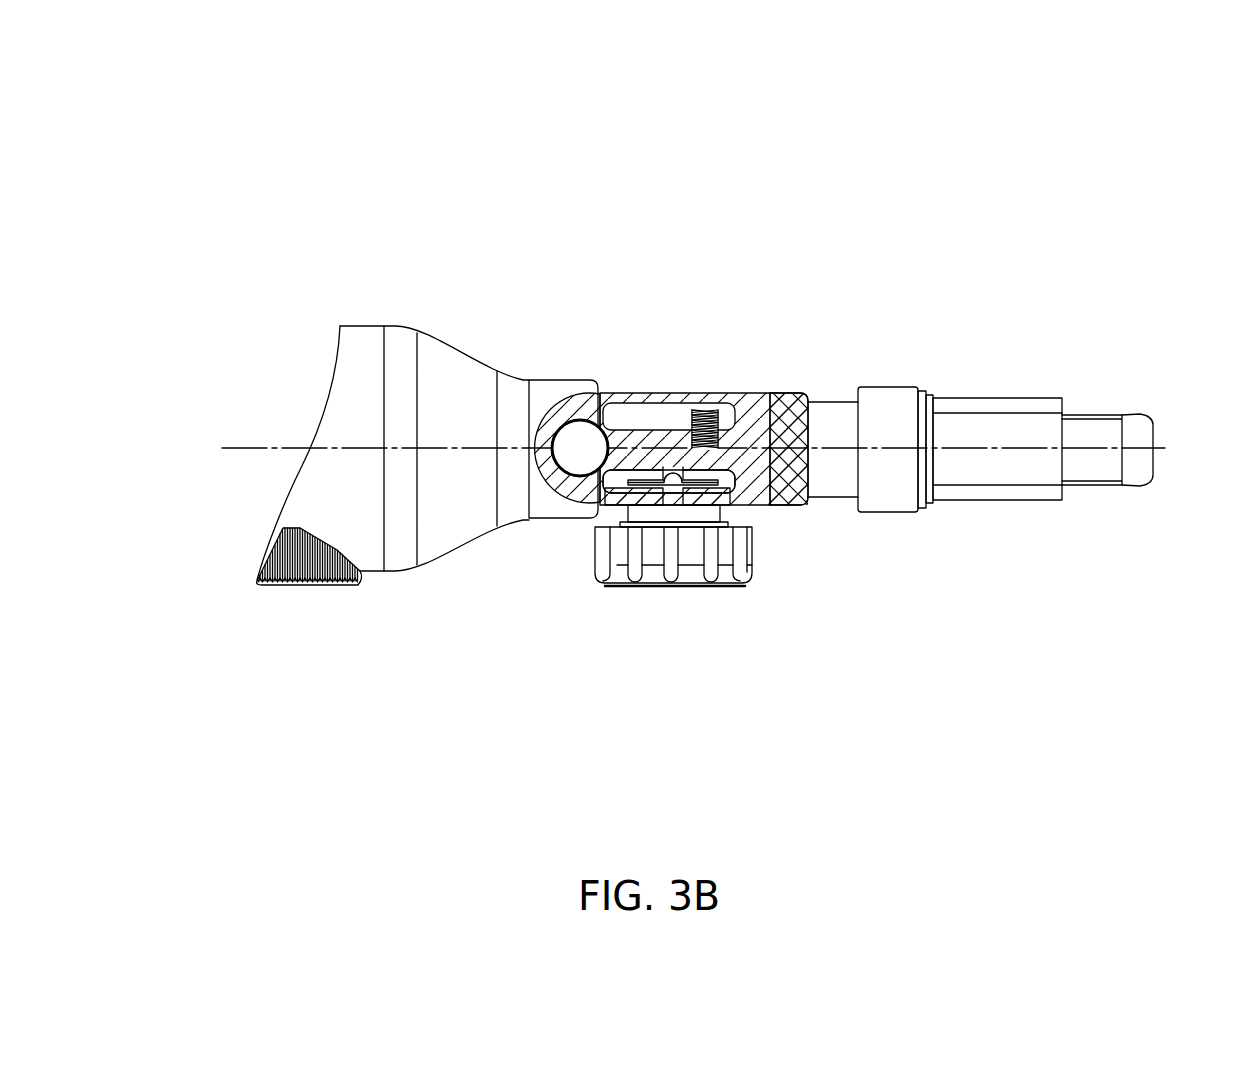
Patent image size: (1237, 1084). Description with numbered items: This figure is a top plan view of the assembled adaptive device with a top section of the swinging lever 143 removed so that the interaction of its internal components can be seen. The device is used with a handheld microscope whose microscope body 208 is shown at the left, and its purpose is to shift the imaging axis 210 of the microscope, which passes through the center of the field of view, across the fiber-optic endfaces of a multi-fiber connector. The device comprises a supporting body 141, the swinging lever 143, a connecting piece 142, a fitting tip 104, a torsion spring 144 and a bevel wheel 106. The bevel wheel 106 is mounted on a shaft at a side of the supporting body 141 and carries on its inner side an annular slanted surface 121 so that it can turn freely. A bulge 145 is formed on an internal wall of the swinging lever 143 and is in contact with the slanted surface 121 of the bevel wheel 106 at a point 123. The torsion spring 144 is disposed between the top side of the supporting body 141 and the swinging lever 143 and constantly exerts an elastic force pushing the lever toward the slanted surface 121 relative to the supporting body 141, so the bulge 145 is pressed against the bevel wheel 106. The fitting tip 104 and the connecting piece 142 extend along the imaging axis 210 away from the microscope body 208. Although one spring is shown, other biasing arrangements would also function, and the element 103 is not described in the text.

The imaging axis 210 is at (277, 448).
The handle body 103 is at (577, 440).
The supporting body 141 is at (613, 403).
The torsion spring 144 is at (710, 410).
The swinging lever 143 is at (760, 410).
The connecting piece 142 is at (815, 392).
The fitting tip 104 is at (1020, 387).
The bulge 145 is at (678, 473).
The point 123 is at (676, 481).
The bevel wheel 106 is at (692, 577).
The slanted surface 121 is at (673, 476).
The microscope body 208 is at (457, 527).